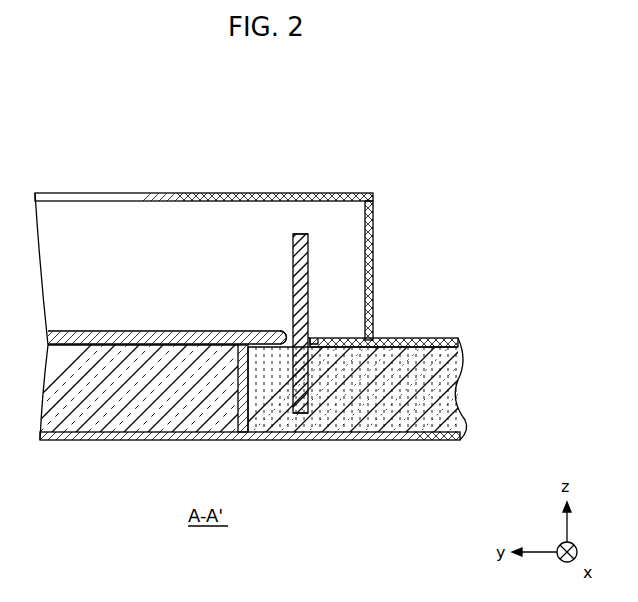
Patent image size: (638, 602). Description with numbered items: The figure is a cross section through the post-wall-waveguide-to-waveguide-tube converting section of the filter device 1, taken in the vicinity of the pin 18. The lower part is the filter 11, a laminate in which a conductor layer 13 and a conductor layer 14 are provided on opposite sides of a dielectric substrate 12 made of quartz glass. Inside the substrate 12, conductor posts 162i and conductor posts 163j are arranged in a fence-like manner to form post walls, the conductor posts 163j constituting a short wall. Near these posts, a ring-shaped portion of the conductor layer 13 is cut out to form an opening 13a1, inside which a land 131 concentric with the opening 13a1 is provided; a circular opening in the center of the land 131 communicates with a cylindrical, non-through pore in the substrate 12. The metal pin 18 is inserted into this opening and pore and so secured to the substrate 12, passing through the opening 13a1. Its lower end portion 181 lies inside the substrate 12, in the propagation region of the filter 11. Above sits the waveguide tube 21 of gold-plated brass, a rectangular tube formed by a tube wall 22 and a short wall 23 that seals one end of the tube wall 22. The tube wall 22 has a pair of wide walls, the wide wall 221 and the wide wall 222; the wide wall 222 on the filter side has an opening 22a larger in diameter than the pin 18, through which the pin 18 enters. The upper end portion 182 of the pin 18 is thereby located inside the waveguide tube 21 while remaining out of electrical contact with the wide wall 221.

The electronic device 1 is at (505, 125).
The filter 11 is at (475, 312).
The substrate 12 is at (163, 401).
The conductor layer 13 is at (396, 338).
The opening 13a1 is at (318, 343).
The land 131 is at (312, 340).
The conductor layer 14 is at (398, 440).
The conductor posts 162i is at (350, 440).
The conductor posts 163j is at (243, 434).
The pin 18 is at (282, 302).
The lower end portion 181 is at (300, 413).
The upper end portion 182 is at (293, 243).
The waveguide tube 21 is at (320, 153).
The tube wall 22 is at (262, 181).
The opening 22a is at (282, 326).
The wide wall 221 is at (213, 193).
The wide wall 222 is at (146, 331).
The short wall 23 is at (373, 243).